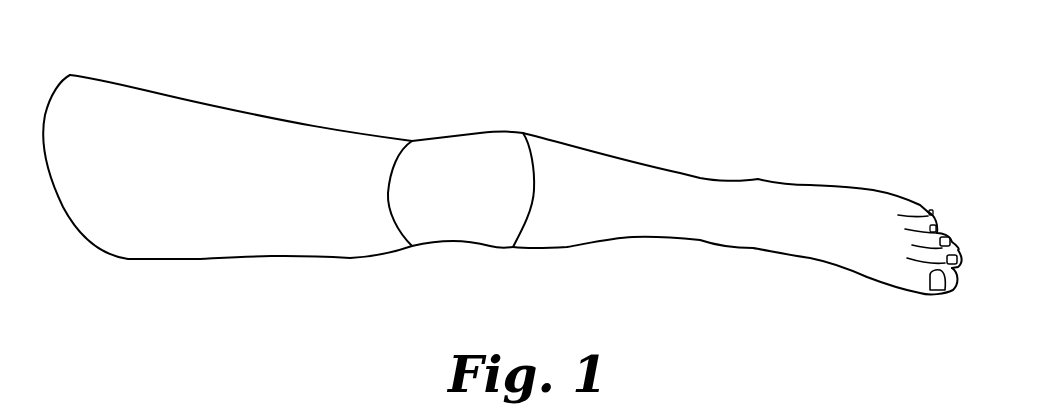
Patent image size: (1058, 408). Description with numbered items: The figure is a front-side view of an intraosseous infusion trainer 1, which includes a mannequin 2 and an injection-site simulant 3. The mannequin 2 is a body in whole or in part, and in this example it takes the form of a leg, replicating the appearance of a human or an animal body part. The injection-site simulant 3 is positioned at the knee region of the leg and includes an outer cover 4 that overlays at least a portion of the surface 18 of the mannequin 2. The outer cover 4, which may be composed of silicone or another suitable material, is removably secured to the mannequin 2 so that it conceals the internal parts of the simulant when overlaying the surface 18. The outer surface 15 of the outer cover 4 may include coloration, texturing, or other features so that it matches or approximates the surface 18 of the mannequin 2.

The intraosseous infusion trainer 1 is at (502, 157).
The mannequin 2 is at (602, 187).
The injection-site simulant 3 is at (460, 137).
The outer cover 4 is at (463, 191).
The outer surface 15 is at (437, 222).
The surface 18 is at (215, 218).